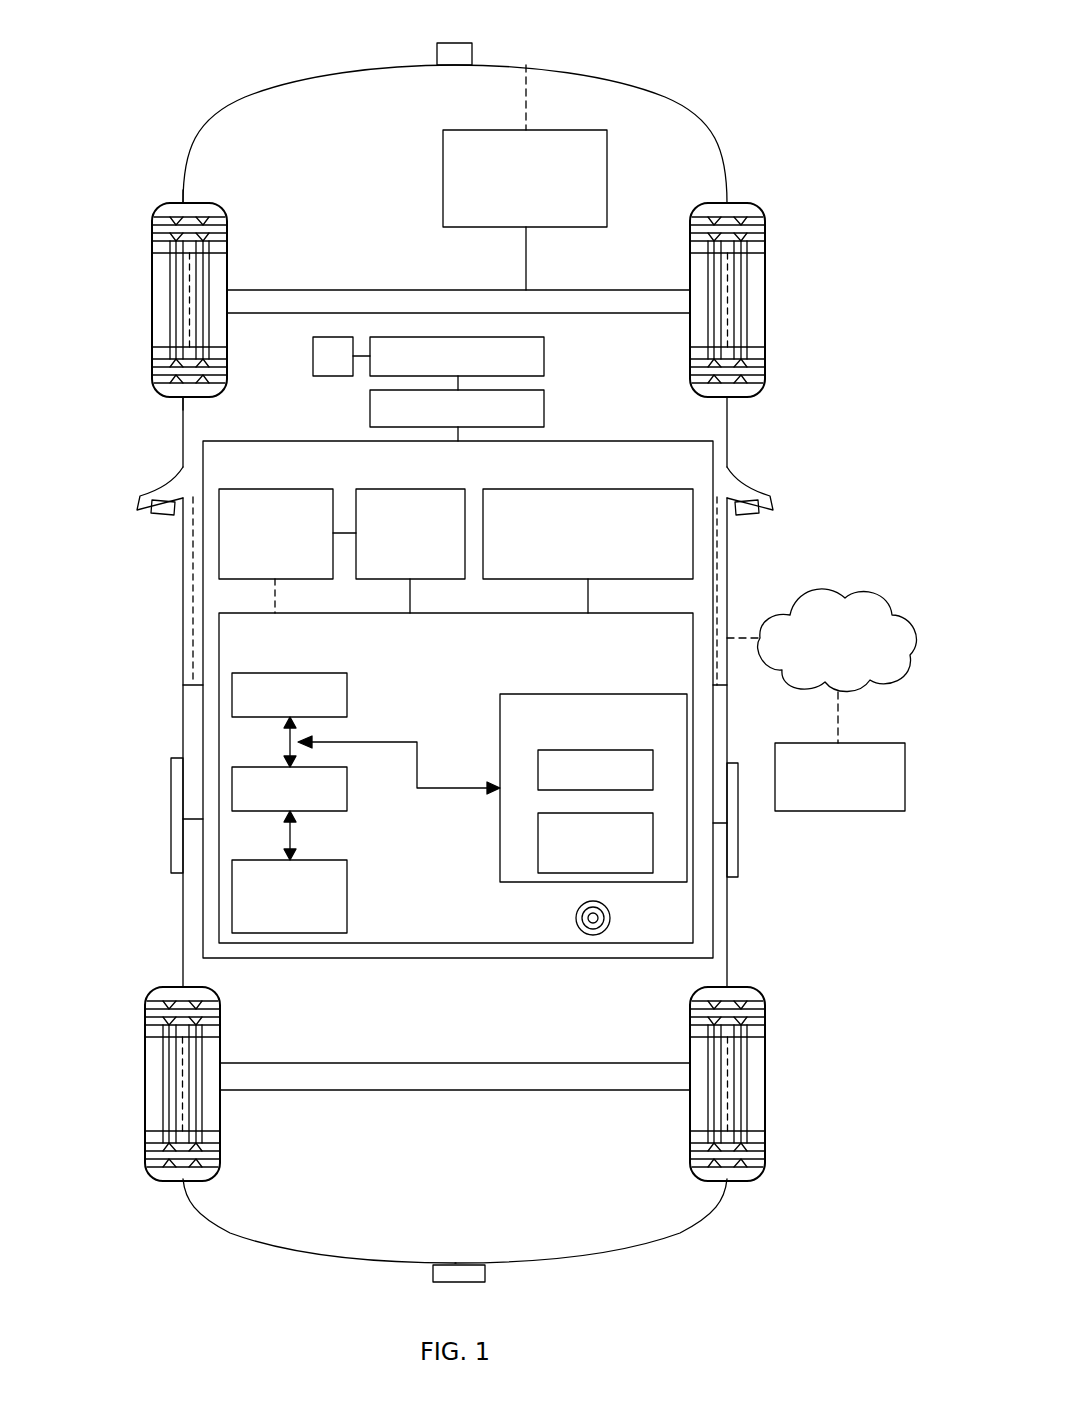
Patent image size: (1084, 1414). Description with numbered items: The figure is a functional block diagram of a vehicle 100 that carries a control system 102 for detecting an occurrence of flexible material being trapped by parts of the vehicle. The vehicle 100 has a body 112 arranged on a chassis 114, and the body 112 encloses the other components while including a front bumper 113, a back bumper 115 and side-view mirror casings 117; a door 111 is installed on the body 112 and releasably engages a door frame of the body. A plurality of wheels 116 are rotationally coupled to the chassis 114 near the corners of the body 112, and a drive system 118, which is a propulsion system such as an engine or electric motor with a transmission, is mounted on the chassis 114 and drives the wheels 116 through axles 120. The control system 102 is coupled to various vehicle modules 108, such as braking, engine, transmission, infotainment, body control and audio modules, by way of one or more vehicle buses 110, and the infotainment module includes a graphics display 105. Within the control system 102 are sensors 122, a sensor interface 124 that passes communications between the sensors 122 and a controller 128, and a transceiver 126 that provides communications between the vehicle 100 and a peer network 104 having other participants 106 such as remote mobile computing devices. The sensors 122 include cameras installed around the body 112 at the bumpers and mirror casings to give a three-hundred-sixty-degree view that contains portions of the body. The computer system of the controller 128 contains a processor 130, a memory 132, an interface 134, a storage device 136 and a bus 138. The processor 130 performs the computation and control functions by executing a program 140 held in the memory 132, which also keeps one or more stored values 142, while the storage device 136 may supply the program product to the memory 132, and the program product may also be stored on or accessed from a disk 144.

The vehicle 100 is at (735, 78).
The control system 102 is at (272, 441).
The peer network 104 is at (838, 592).
The graphics display 105 is at (313, 355).
The participant 106 is at (843, 811).
The vehicle module 108 is at (544, 358).
The vehicle bus 110 is at (544, 412).
The door 111 is at (725, 613).
The body 112 is at (185, 420).
The front bumper 113 is at (313, 80).
The chassis 114 is at (524, 110).
The back bumper 115 is at (337, 1258).
The wheel 116 is at (152, 310).
The side-view mirror casing 117 is at (150, 490).
The drive system 118 is at (443, 151).
The axle 120 is at (288, 290).
The sensor 122 is at (270, 489).
The sensor interface 124 is at (378, 489).
The transceiver 126 is at (640, 489).
The controller 128 is at (219, 645).
The processor 130 is at (347, 696).
The memory 132 is at (500, 714).
The interface 134 is at (347, 795).
The storage device 136 is at (347, 900).
The bus 138 is at (300, 742).
The program 140 is at (538, 766).
The stored value 142 is at (538, 846).
The disk 144 is at (576, 917).